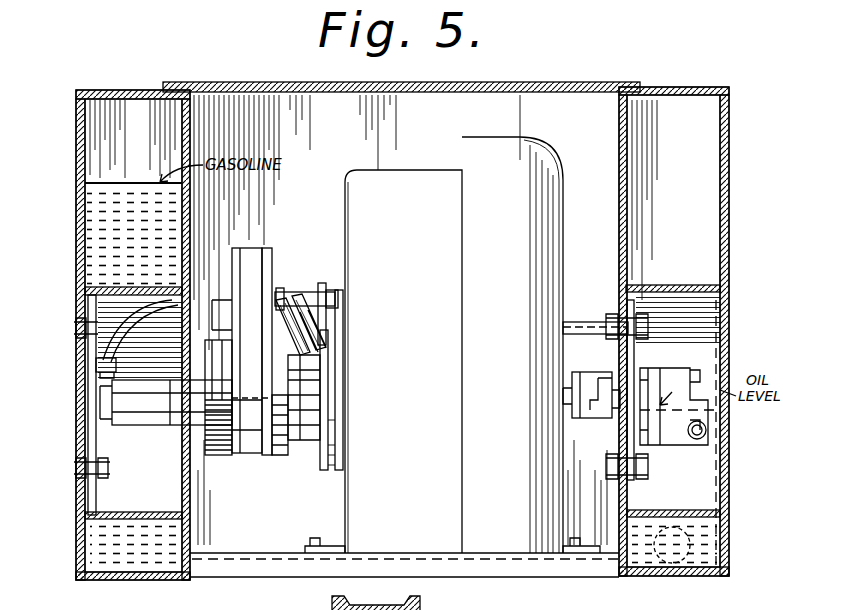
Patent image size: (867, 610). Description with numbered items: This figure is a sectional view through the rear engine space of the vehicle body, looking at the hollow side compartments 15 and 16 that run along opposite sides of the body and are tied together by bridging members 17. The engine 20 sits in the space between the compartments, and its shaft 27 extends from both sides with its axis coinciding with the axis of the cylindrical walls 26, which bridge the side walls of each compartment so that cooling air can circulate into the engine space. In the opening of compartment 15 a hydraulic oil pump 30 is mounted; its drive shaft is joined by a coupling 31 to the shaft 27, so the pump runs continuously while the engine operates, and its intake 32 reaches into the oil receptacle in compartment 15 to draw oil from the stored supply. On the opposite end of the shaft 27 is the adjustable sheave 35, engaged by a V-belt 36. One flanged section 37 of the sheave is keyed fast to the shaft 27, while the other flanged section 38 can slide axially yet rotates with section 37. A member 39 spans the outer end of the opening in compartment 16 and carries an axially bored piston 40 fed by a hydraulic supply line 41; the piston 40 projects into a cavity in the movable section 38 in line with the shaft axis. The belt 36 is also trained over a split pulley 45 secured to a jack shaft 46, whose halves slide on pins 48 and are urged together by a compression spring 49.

The hollow compartment 15 is at (688, 87).
The hollow compartment 16 is at (128, 92).
The bridging member 17 is at (264, 92).
The engine 20 is at (402, 164).
The cylindrical wall 26 is at (85, 303).
The shaft 27 is at (318, 446).
The hydraulic oil pump 30 is at (709, 368).
The coupling 31 is at (590, 372).
The intake 32 is at (708, 428).
The adjustable sheave 35 is at (265, 459).
The V-belt 36 is at (246, 248).
The flanged section 37 is at (280, 462).
The flanged section 38 is at (203, 448).
The member 39 is at (86, 455).
The piston 40 is at (98, 390).
The hydraulic supply line 41 is at (95, 356).
The split pulley 45 is at (282, 248).
The jack shaft 46 is at (586, 318).
The pin 48 is at (286, 296).
The compression spring 49 is at (312, 300).